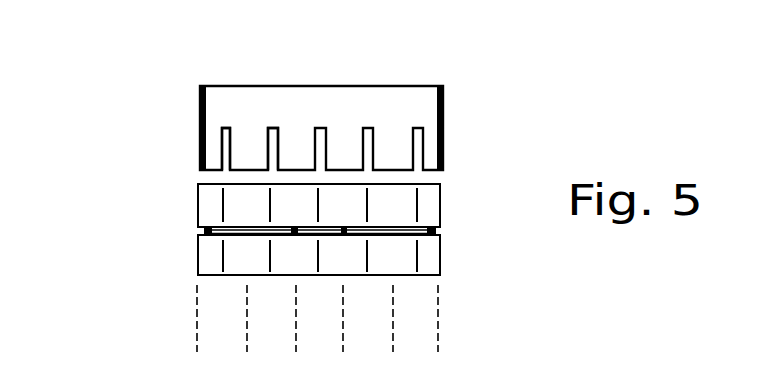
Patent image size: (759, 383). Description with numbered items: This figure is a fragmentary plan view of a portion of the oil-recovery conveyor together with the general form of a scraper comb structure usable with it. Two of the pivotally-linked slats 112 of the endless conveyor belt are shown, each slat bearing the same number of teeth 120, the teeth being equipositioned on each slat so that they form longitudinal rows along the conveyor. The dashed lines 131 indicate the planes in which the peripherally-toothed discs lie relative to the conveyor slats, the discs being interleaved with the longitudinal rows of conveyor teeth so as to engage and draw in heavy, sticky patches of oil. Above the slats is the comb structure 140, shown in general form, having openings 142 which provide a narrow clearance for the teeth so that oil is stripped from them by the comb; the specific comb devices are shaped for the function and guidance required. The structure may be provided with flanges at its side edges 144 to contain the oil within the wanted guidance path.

The comb structure 140 is at (245, 103).
The side edges 144 is at (200, 111).
The openings 142 is at (272, 156).
The teeth 120 is at (367, 206).
The slats 112 is at (215, 252).
The dashed lines 131 is at (393, 312).